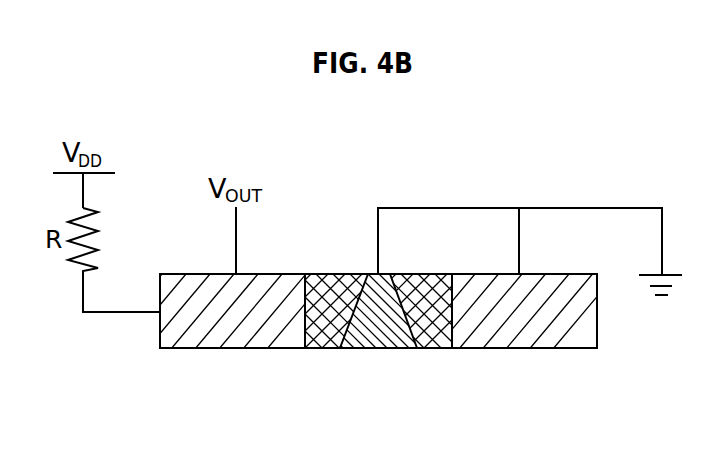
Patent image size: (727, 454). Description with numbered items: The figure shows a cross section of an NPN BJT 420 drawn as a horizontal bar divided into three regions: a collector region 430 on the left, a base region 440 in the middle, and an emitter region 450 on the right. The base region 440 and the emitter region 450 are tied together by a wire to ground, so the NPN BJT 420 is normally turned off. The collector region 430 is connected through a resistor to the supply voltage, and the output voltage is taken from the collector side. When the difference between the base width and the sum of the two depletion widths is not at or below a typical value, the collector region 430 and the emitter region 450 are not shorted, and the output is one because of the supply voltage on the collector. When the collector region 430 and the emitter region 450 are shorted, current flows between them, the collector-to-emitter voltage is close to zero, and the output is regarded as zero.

The NPN BJT 420 is at (400, 152).
The collector region 430 is at (237, 338).
The base region 440 is at (380, 338).
The emitter region 450 is at (523, 338).